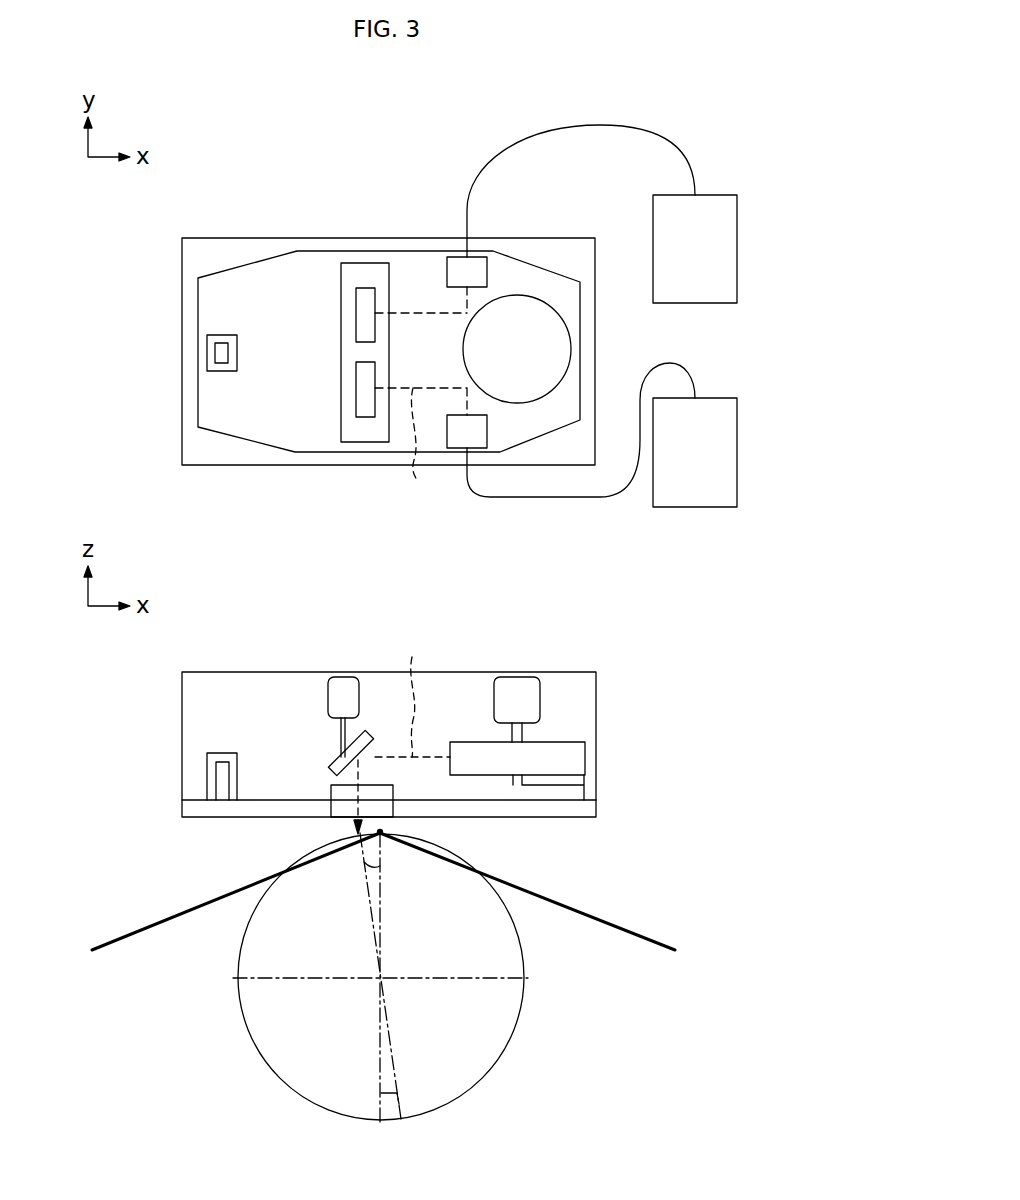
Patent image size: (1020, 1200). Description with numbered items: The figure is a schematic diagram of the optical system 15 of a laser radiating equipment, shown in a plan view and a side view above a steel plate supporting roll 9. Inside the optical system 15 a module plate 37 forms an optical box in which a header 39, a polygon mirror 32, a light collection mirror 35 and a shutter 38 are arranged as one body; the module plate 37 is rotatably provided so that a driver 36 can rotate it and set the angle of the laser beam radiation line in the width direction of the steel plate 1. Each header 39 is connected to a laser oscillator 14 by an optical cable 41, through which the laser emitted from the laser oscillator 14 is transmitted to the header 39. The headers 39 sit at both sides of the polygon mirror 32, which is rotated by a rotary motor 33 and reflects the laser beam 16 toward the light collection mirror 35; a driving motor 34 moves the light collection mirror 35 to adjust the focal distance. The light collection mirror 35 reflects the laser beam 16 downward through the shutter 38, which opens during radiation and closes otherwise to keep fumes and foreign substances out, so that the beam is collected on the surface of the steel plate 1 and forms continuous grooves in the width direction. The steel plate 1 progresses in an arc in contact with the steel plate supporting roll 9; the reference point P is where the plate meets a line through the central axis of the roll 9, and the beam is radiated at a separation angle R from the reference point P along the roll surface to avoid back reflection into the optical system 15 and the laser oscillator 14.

The steel plate 1 is at (152, 922).
The steel plate supporting roll 9 is at (493, 1033).
The laser oscillator 14 is at (737, 249).
The optical system 15 is at (182, 238).
The laser beam 16 is at (420, 560).
The polygon mirror 32 is at (557, 348).
The rotary motor 33 is at (517, 672).
The driving motor 34 is at (343, 672).
The light collection mirror 35 is at (356, 372).
The driver 36 is at (215, 351).
The module plate 37 is at (225, 420).
The shutter 38 is at (341, 294).
The header 39 is at (447, 263).
The optical cable 41 is at (500, 153).
The reference point P is at (383, 840).
The separation angle R is at (378, 865).